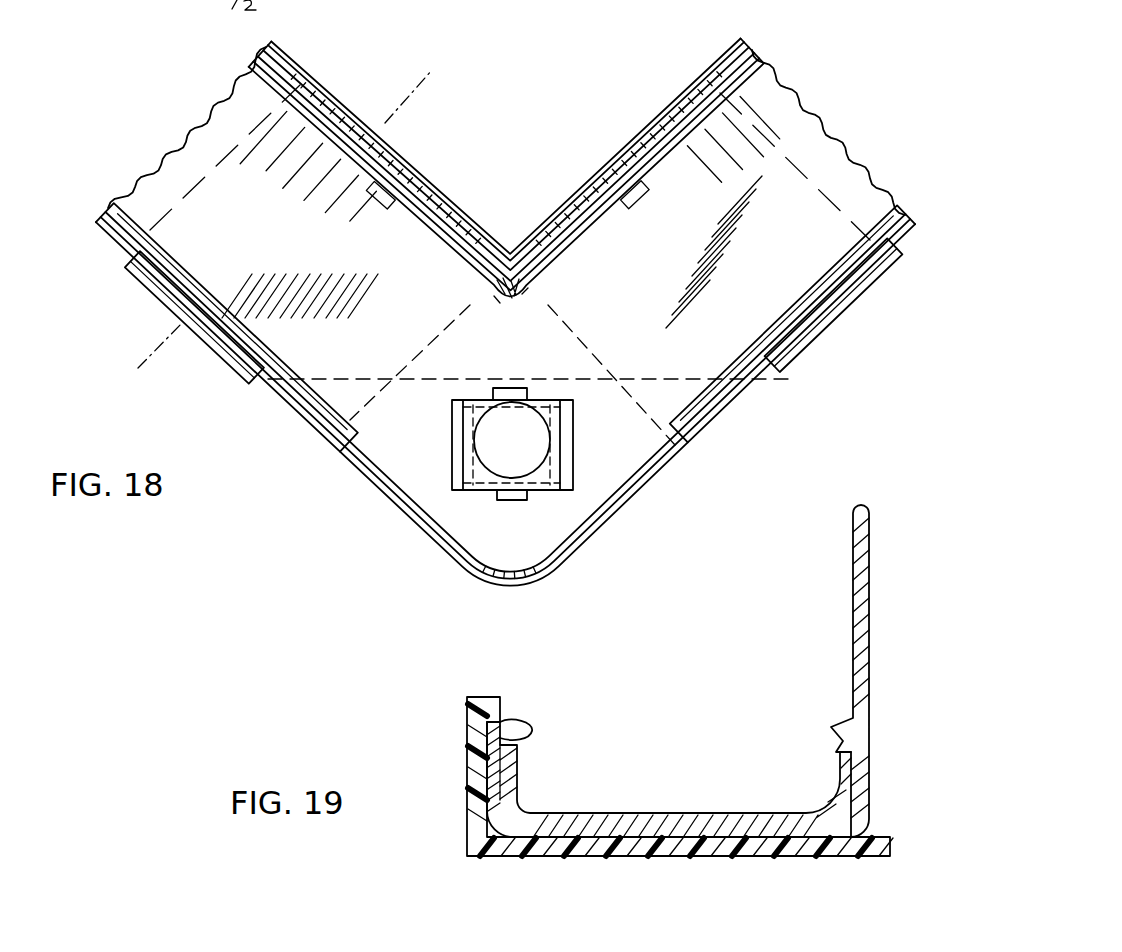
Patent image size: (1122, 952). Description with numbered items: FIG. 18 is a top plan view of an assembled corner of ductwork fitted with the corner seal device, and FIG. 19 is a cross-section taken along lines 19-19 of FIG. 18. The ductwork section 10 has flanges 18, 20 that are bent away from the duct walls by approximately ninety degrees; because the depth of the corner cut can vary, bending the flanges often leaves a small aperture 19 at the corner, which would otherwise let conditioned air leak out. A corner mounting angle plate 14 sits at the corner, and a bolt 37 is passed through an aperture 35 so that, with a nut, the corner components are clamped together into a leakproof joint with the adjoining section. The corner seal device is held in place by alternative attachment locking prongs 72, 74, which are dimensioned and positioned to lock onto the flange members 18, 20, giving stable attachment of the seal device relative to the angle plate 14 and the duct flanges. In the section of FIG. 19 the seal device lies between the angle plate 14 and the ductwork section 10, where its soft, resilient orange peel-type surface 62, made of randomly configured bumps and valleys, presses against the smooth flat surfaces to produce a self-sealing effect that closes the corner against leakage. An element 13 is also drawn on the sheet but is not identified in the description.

In FIG. 19, the ductwork section 10 is at (873, 627).
In FIG. 18, the upper edge rail 13 is at (729, 52).
In FIG. 18, the corner mounting angle plate 14 is at (415, 457).
In FIG. 19, the corner mounting angle plate 14 is at (643, 812).
In FIG. 18, the flange 18 is at (717, 413).
In FIG. 18, the small aperture 19 is at (150, 355).
In FIG. 18, the flange 20 is at (313, 423).
In FIG. 19, the flange 20 is at (522, 722).
In FIG. 18, the aperture 35 is at (478, 477).
In FIG. 18, the bolt 37 is at (543, 487).
In FIG. 19, the orange peel-type surface 62 is at (472, 711).
In FIG. 18, the attachment locking prong 72 is at (138, 283).
In FIG. 18, the attachment locking prong 74 is at (833, 320).